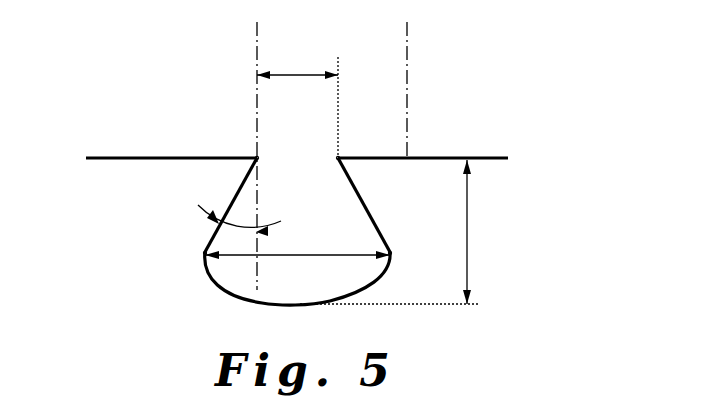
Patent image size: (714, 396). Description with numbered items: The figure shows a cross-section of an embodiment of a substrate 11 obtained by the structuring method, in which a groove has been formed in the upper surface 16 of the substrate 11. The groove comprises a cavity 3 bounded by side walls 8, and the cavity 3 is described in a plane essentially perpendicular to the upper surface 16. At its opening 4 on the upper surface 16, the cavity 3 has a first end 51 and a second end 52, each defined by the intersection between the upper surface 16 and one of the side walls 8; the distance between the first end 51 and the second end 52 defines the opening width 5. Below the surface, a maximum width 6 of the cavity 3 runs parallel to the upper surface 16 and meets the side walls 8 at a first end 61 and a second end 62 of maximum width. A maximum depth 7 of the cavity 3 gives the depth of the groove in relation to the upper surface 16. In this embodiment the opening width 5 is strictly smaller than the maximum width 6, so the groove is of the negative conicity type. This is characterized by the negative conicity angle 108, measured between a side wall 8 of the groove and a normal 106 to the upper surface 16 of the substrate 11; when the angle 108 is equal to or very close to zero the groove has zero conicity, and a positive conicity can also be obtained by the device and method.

The cavity 3 is at (296, 231).
The opening 4 is at (304, 172).
The opening width 5 is at (297, 104).
The maximum width 6 is at (297, 244).
The maximum depth 7 is at (393, 232).
The side walls 8 is at (238, 191).
The substrate 11 is at (299, 206).
The upper surface 16 is at (449, 157).
The first end 51 is at (255, 157).
The second end 52 is at (341, 157).
The first end of maximum width 61 is at (204, 256).
The second end of maximum width 62 is at (392, 254).
The normal 106 is at (407, 109).
The negative conicity angle 108 is at (222, 233).